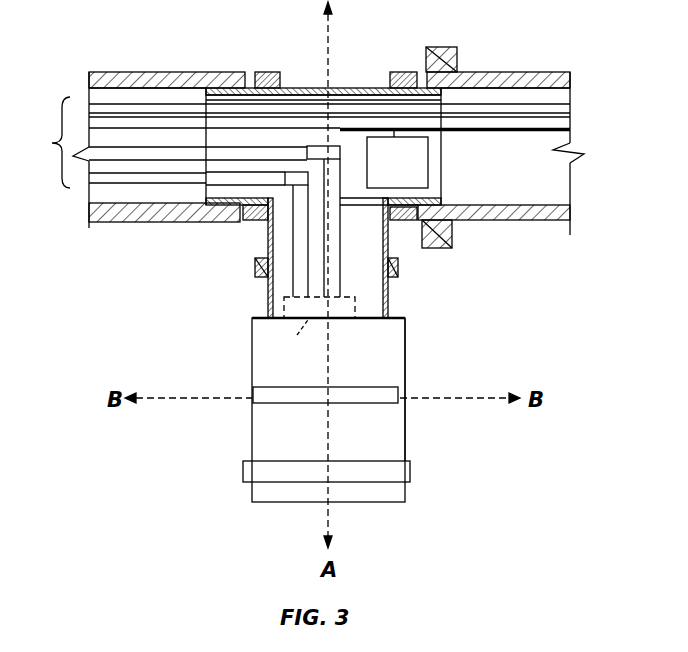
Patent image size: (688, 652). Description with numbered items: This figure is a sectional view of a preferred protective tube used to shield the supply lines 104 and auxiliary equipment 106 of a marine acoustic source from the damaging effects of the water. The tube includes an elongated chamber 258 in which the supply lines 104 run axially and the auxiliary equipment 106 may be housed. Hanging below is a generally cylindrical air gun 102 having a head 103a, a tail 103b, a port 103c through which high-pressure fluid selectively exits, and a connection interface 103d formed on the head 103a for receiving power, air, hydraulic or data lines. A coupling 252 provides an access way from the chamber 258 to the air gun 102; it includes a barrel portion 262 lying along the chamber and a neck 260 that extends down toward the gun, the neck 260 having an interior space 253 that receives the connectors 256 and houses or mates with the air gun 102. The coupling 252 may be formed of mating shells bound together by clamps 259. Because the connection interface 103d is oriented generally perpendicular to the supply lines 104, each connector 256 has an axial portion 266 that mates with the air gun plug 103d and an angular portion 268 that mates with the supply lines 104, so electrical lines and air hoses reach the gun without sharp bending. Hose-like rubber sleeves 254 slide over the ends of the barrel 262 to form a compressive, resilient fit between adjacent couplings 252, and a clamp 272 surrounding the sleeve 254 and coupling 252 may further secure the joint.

The air gun 102 is at (252, 342).
The head 103a is at (397, 335).
The tail 103b is at (397, 498).
The port 103c is at (392, 398).
The connection interface 103d is at (302, 342).
The supply line 104 is at (41, 142).
The auxiliary equipment 106 is at (419, 173).
The coupling 252 is at (322, 80).
The interior space 253 is at (388, 292).
The sleeve 254 is at (143, 73).
The connector 256 is at (290, 255).
The chamber 258 is at (488, 200).
The clamp 259 is at (262, 72).
The neck 260 is at (268, 305).
The barrel portion 262 is at (364, 88).
The axial portion 266 is at (294, 276).
The angular portion 268 is at (285, 176).
The clamp 272 is at (440, 47).